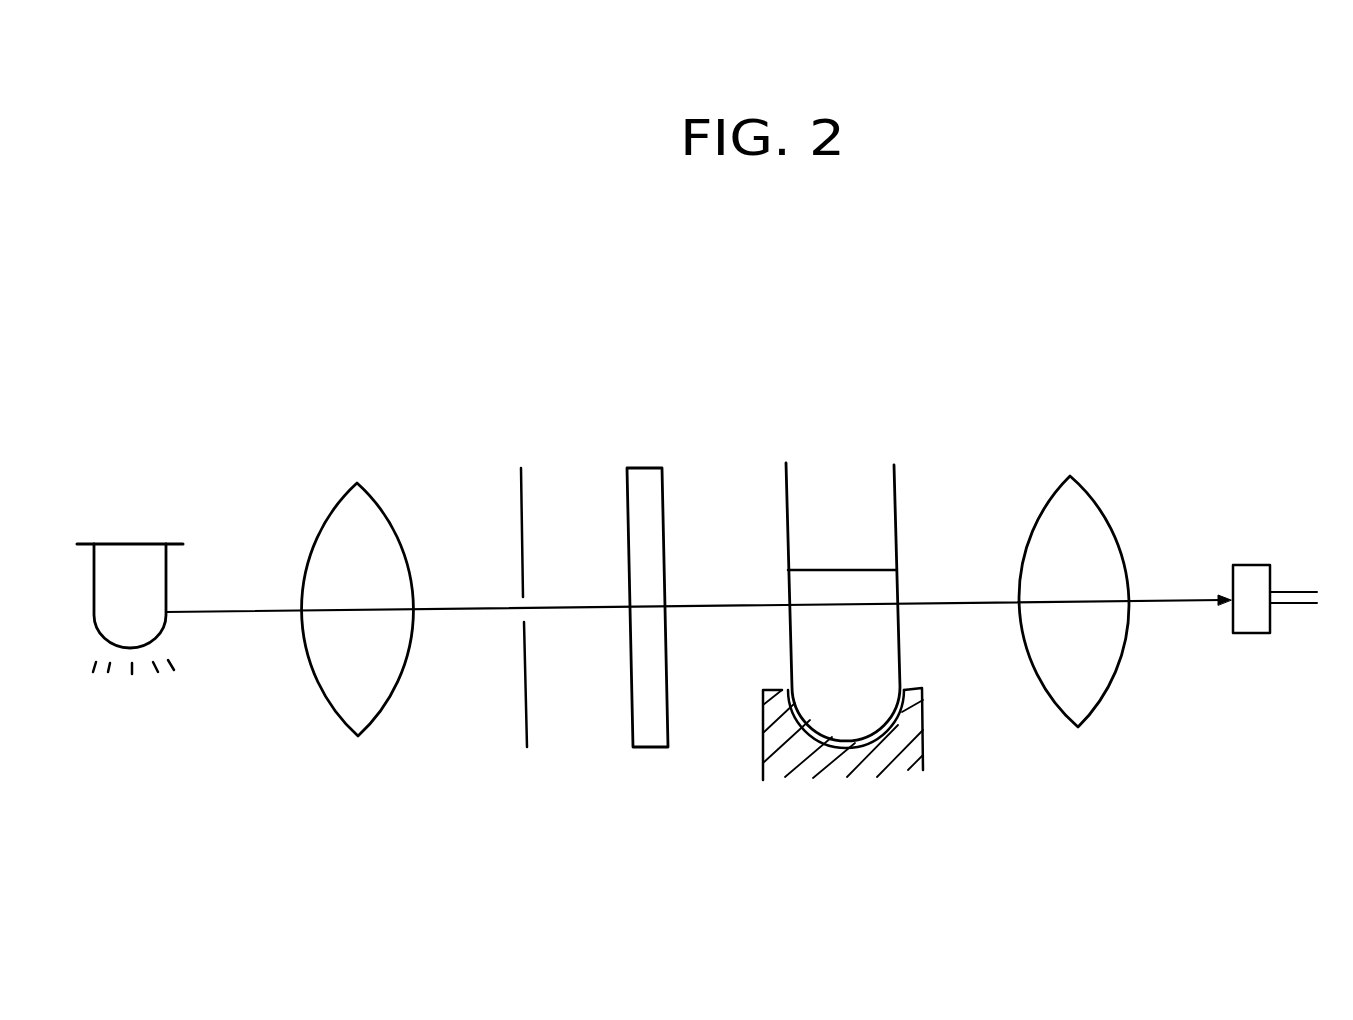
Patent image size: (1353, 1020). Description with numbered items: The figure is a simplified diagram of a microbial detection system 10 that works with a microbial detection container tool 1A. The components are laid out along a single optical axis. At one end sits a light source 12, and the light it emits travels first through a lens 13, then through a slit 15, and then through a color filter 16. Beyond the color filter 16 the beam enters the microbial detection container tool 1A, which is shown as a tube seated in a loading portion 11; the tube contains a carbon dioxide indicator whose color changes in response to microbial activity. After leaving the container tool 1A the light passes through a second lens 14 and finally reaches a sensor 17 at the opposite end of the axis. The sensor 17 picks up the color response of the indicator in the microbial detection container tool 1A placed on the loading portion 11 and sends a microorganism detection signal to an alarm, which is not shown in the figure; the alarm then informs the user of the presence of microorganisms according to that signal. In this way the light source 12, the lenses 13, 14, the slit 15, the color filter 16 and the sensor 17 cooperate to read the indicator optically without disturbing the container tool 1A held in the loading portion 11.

The microbial detection system 10 is at (301, 468).
The light source 12 is at (152, 552).
The lens 13 is at (372, 502).
The slit 15 is at (523, 483).
The color filter 16 is at (652, 470).
The microbial detection container tool 1A is at (897, 498).
The loading portion 11 is at (920, 745).
The lens 14 is at (1102, 522).
The sensor 17 is at (1252, 570).